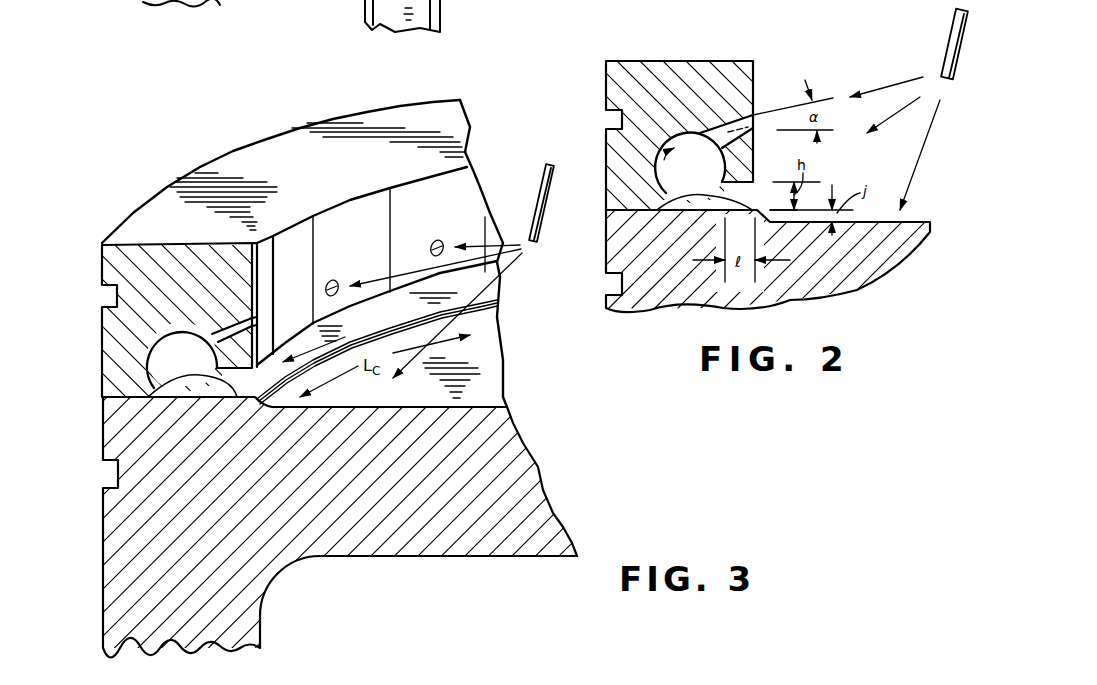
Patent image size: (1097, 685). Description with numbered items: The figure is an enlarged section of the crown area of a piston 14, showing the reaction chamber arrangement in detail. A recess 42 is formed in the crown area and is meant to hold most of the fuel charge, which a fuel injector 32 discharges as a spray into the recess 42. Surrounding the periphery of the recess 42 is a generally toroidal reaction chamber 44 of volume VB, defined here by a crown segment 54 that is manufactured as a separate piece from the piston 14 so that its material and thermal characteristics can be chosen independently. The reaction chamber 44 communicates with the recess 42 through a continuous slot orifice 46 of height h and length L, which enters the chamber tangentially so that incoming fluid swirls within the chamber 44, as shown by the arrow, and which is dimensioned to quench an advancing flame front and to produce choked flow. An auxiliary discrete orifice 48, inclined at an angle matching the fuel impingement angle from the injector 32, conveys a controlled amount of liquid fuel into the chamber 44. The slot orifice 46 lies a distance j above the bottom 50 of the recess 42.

In FIG. 3, the piston 14 is at (103, 450).
In FIG. 2, the piston 14 is at (606, 246).
In FIG. 3, the fuel injector 32 is at (533, 214).
In FIG. 2, the fuel injector 32 is at (948, 34).
In FIG. 2, the recess 42 is at (902, 163).
In FIG. 3, the reaction chamber 44 is at (199, 366).
In FIG. 2, the reaction chamber 44 is at (606, 136).
In FIG. 3, the slot orifice 46 is at (200, 376).
In FIG. 2, the slot orifice 46 is at (700, 196).
In FIG. 3, the auxiliary discrete orifice 48 is at (228, 320).
In FIG. 2, the auxiliary discrete orifice 48 is at (725, 130).
In FIG. 3, the bottom of the recess 50 is at (497, 406).
In FIG. 2, the crown segment 54 is at (606, 86).